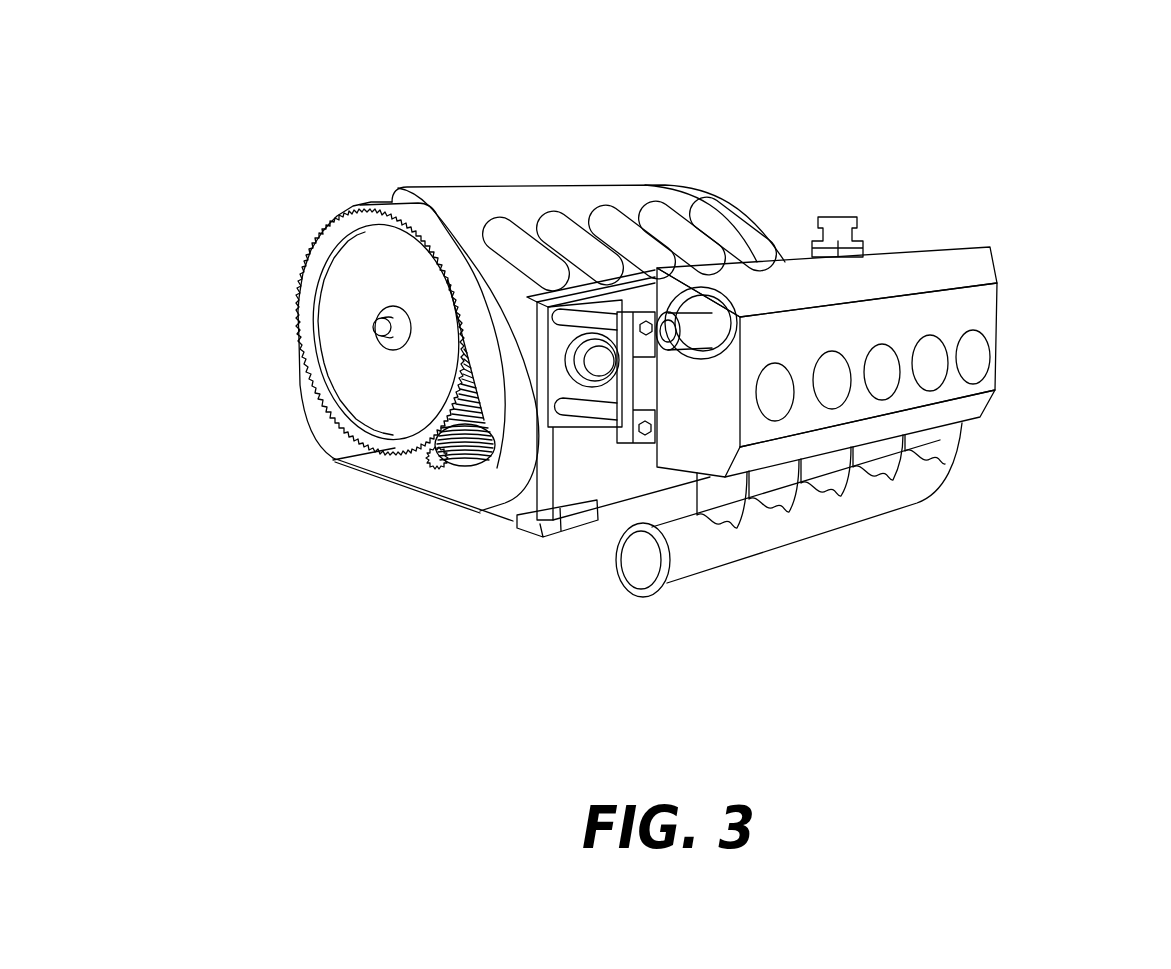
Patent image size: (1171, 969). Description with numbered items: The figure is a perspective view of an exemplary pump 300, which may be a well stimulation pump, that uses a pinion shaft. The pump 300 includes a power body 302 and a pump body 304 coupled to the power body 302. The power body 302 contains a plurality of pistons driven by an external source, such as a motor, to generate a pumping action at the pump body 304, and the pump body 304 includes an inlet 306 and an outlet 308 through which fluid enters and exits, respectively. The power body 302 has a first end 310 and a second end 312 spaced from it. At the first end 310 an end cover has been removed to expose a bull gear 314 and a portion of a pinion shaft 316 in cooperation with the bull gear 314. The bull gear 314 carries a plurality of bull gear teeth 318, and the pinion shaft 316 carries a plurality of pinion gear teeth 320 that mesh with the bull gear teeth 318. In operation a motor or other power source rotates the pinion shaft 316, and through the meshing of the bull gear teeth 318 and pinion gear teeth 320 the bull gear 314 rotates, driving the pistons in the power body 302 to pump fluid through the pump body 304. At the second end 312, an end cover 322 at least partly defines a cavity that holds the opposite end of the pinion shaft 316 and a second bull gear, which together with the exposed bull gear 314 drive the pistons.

The pump 300 is at (975, 88).
The power body 302 is at (338, 157).
The pump body 304 is at (1052, 345).
The inlet 306 is at (622, 562).
The outlet 308 is at (690, 320).
The first end 310 is at (287, 238).
The second end 312 is at (757, 177).
The bull gear 314 is at (348, 342).
The pinion shaft 316 is at (433, 470).
The bull gear teeth 318 is at (432, 425).
The pinion gear teeth 320 is at (467, 467).
The end cover 322 is at (722, 197).